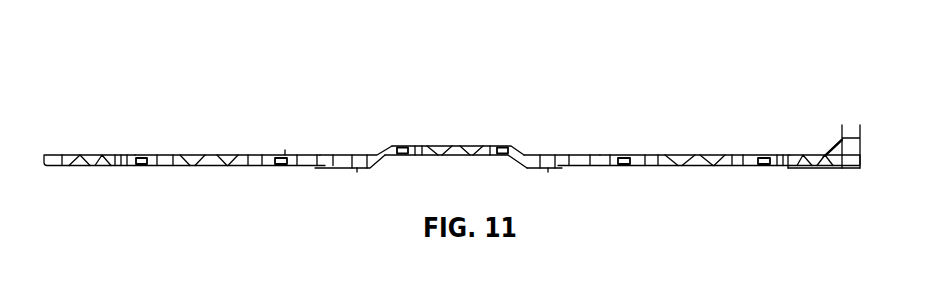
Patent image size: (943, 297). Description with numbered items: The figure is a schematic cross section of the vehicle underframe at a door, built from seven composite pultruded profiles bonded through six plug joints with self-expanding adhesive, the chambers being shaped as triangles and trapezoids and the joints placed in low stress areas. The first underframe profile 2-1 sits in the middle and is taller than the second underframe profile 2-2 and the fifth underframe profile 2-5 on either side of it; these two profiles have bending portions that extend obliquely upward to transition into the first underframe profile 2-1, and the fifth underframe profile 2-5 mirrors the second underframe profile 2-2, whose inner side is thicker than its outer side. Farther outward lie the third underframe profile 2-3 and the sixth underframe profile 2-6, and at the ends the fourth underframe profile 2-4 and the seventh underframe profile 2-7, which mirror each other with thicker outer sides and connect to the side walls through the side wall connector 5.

The first underframe profile 2-1 is at (456, 116).
The second underframe profile 2-2 is at (368, 118).
The third underframe profile 2-3 is at (230, 116).
The fourth underframe profile 2-4 is at (107, 116).
The fifth underframe profile 2-5 is at (592, 119).
The sixth underframe profile 2-6 is at (695, 116).
The seventh underframe profile 2-7 is at (830, 116).
The side wall connector 5 is at (878, 128).